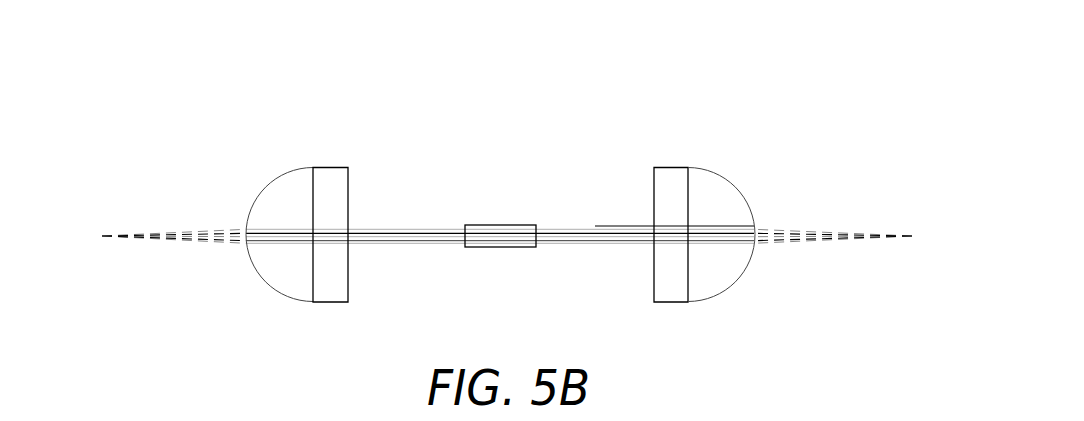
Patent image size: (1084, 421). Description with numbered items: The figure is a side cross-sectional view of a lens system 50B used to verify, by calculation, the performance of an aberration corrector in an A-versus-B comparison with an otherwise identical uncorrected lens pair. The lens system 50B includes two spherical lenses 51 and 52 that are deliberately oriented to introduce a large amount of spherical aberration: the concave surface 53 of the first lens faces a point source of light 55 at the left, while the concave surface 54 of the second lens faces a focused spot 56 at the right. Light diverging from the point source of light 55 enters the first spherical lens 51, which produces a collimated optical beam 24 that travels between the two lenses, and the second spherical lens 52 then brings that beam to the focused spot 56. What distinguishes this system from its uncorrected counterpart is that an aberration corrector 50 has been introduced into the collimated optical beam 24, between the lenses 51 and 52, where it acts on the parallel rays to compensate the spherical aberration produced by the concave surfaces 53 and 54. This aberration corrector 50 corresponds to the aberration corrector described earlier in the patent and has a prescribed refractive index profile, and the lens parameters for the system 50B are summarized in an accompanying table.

The lens system 50B is at (474, 29).
The collimated optical beam 24 is at (402, 226).
The aberration corrector 50 is at (503, 225).
The spherical lens 51 is at (318, 168).
The spherical lens 52 is at (692, 167).
The concave surface 53 is at (252, 183).
The concave surface 54 is at (758, 183).
The point source of light 55 is at (96, 220).
The focused spot 56 is at (920, 215).